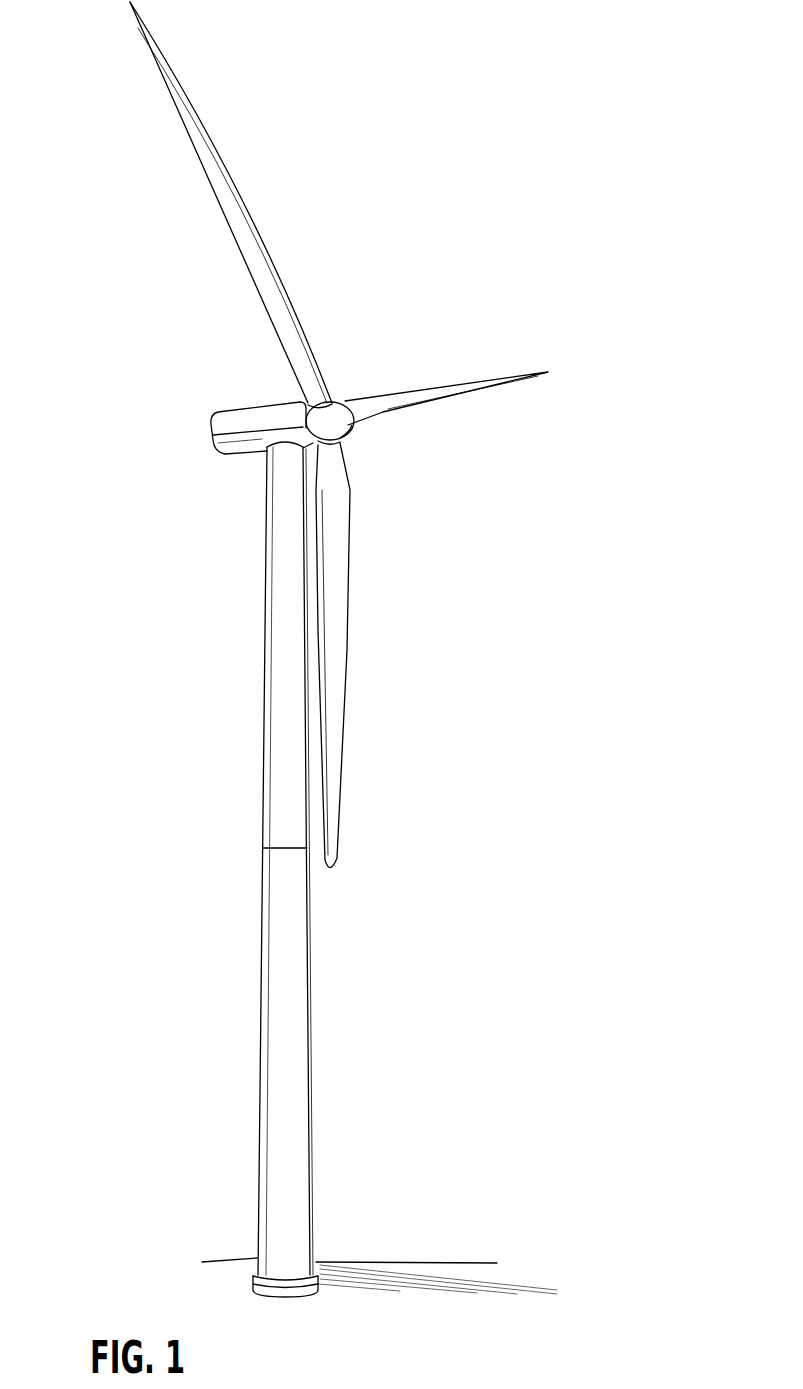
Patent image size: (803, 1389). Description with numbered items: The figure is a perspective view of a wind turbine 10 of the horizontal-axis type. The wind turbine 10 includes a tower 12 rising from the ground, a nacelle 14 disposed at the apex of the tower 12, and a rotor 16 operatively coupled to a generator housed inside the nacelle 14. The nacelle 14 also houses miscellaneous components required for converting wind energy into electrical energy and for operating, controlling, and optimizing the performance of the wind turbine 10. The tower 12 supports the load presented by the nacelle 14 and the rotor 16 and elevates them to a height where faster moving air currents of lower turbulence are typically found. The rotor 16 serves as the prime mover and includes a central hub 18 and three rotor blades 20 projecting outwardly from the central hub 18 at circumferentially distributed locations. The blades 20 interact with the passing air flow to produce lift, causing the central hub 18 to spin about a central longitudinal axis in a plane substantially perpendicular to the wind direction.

The wind turbine 10 is at (479, 176).
The tower 12 is at (265, 744).
The nacelle 14 is at (237, 408).
The rotor 16 is at (344, 396).
The central hub 18 is at (352, 431).
The rotor blade 20 is at (171, 100).